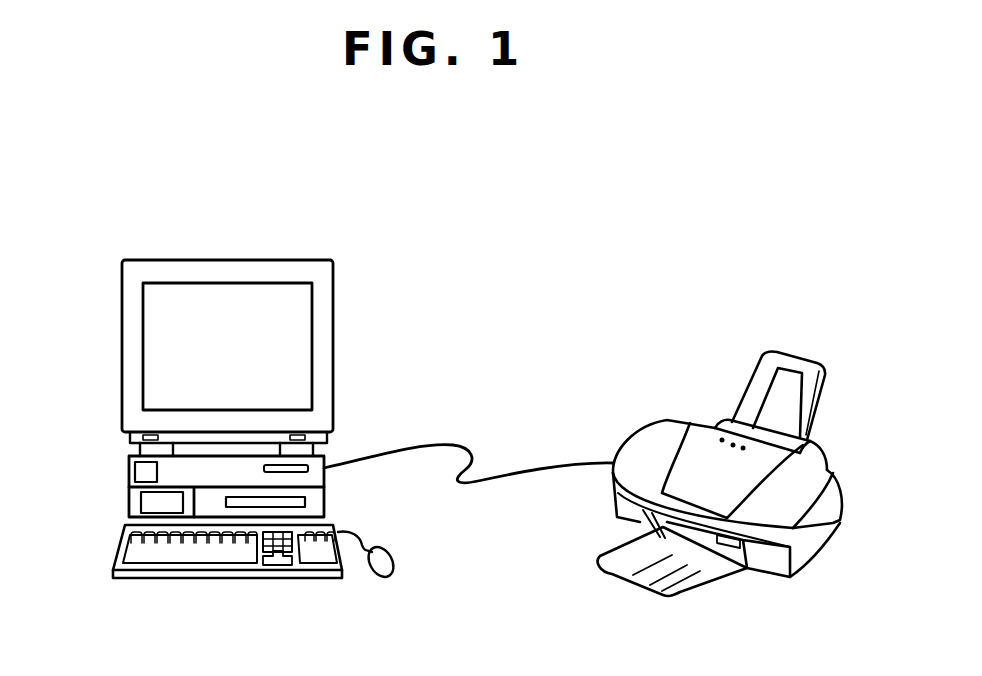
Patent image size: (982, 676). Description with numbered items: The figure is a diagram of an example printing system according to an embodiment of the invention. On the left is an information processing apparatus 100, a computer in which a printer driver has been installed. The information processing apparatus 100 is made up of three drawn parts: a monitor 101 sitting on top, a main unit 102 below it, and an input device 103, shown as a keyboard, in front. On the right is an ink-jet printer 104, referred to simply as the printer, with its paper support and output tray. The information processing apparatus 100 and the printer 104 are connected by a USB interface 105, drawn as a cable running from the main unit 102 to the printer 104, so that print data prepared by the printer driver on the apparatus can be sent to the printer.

The information processing apparatus 100 is at (250, 236).
The monitor 101 is at (122, 336).
The main unit 102 is at (129, 472).
The input device 103 is at (117, 547).
The ink-jet printer 104 is at (677, 420).
The USB interface 105 is at (512, 472).